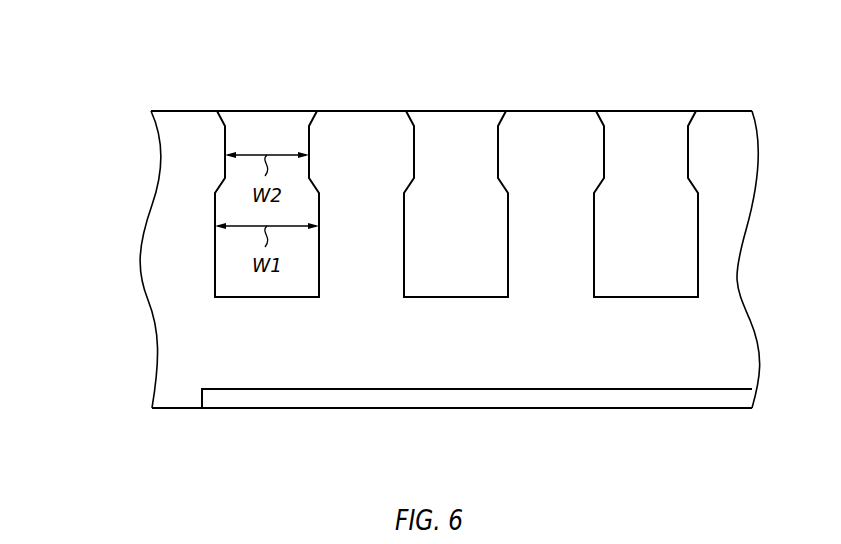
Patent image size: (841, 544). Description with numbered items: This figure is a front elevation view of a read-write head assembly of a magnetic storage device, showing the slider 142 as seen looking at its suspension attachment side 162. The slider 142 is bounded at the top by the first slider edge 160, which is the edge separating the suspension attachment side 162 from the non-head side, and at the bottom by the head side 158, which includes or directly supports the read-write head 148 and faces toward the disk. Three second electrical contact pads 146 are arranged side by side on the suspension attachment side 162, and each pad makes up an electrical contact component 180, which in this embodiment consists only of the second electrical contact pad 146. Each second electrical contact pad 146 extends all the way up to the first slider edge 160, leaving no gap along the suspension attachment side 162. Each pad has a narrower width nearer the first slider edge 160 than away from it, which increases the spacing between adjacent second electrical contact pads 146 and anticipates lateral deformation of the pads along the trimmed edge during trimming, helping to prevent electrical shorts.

The first slider edge 160 is at (355, 110).
The suspension attachment side 162 is at (175, 296).
The slider 142 is at (623, 367).
The head side 158 is at (178, 408).
The read-write head 148 is at (403, 397).
The second electrical contact pad 146 is at (258, 275).
The electrical contact component 180 is at (321, 273).